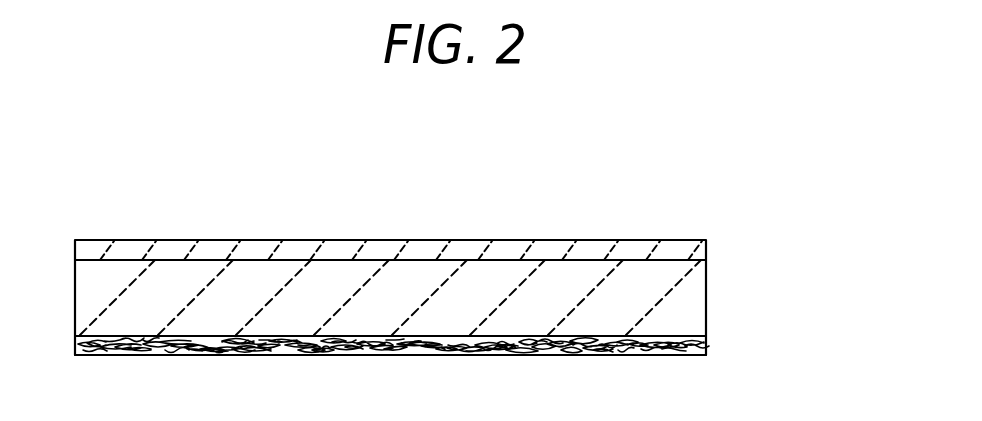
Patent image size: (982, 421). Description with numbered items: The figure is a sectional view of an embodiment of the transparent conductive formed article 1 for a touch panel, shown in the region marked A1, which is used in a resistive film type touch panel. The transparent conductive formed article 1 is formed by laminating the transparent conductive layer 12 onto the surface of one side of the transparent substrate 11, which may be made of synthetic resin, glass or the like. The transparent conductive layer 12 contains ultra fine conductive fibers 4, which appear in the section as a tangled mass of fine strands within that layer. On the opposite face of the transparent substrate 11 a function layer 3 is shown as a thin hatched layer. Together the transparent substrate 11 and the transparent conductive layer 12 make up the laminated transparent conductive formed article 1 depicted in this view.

The laminated article A1 is at (226, 207).
The transparent conductive formed article 1 is at (800, 257).
The function layer 3 is at (521, 238).
The ultra fine conductive fibers 4 is at (462, 354).
The transparent substrate 11 is at (693, 289).
The transparent conductive layer 12 is at (686, 342).